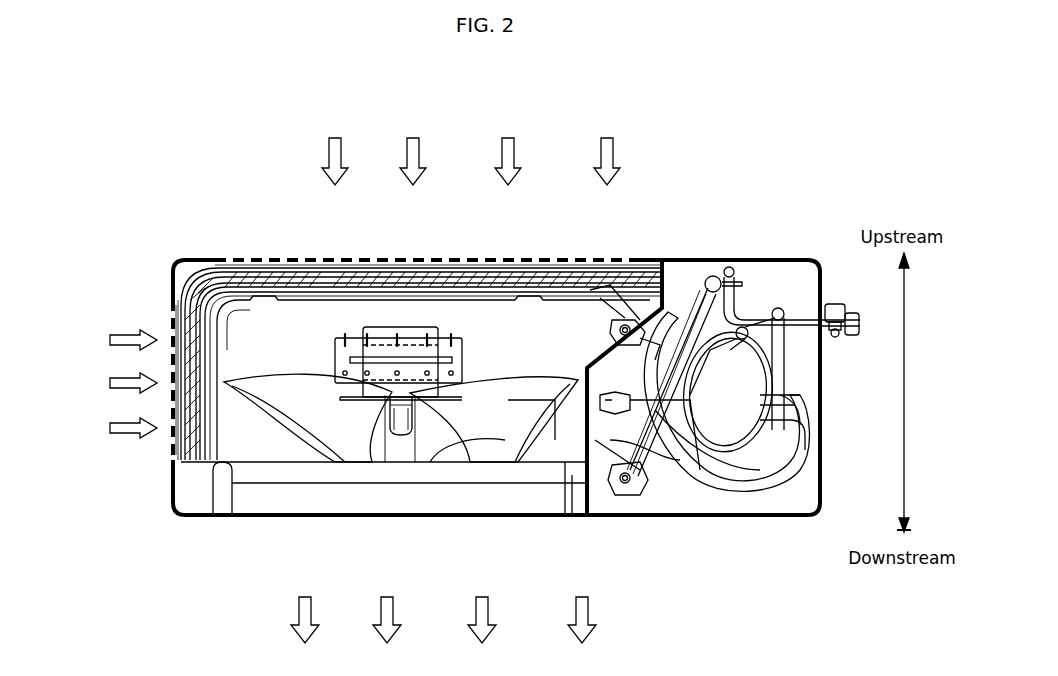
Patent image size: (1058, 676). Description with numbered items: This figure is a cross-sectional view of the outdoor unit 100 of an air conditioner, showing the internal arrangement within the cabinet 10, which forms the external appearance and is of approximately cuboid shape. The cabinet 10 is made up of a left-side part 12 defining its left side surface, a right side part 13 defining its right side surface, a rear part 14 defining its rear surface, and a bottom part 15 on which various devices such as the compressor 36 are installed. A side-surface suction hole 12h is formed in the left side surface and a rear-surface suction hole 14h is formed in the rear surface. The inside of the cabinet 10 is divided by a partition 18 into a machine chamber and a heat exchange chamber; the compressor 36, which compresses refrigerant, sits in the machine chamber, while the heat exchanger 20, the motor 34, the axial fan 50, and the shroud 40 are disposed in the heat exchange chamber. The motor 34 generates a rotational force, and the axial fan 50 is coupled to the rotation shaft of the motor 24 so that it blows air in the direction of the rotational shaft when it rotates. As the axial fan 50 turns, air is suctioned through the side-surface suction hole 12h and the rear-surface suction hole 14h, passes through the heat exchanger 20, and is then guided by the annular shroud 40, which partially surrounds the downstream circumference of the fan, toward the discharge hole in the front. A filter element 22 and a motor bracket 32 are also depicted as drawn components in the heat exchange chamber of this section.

The air conditioner indoor unit 100 is at (130, 163).
The cabinet 10 is at (161, 483).
The left-side part 12 is at (172, 279).
The side-surface suction hole 12h is at (172, 311).
The right side part 13 is at (823, 413).
The rear part 14 is at (201, 263).
The rear-surface suction hole 14h is at (229, 266).
The bottom part 15 is at (589, 300).
The partition 18 is at (628, 325).
The heat exchanger 20 is at (183, 276).
The filter 22 is at (260, 280).
The motor 24 is at (186, 372).
The motor bracket 32 is at (452, 338).
The motor 34 is at (364, 338).
The compressor 36 is at (762, 397).
The shroud 40 is at (258, 496).
The axial fan 50 is at (440, 410).